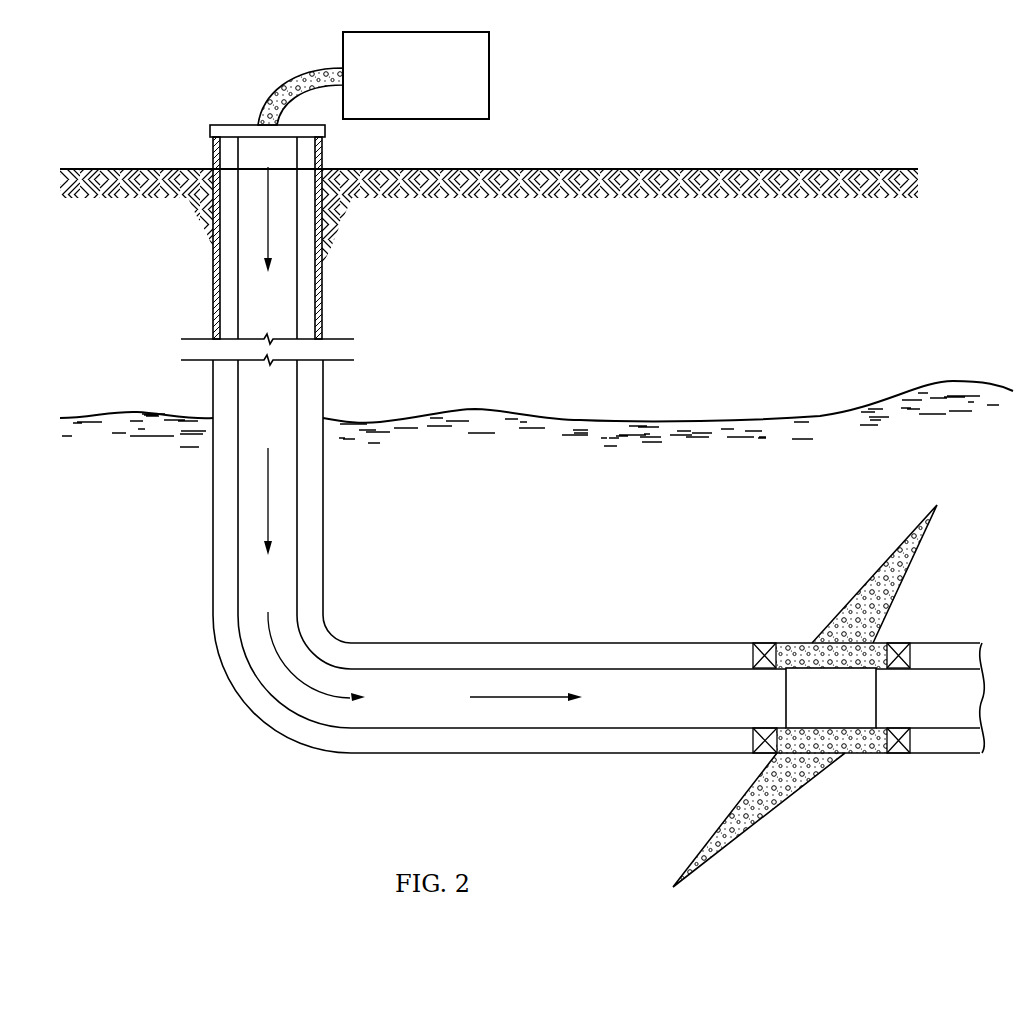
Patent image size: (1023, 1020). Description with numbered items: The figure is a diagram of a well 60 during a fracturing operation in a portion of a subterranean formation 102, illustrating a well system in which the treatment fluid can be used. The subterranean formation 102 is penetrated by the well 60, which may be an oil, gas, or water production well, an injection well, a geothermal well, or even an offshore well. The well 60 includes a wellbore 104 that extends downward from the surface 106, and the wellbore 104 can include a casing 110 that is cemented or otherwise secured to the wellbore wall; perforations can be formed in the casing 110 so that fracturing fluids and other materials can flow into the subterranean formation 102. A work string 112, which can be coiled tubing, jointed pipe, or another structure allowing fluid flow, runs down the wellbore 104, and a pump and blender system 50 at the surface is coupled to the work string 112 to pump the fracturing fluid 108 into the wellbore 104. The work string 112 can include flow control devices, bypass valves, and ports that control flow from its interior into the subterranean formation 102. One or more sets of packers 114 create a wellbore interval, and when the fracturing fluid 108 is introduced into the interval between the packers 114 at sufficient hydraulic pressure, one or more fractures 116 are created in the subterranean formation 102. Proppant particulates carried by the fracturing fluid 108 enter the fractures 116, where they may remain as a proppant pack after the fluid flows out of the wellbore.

The pump and blender system 50 is at (428, 89).
The well 60 is at (224, 706).
The subterranean formation 102 is at (548, 491).
The wellbore 104 is at (226, 244).
The surface 106 is at (762, 169).
The fracturing fluid 108 is at (290, 80).
The casing 110 is at (213, 287).
The work string 112 is at (238, 559).
The packers 114 is at (765, 643).
The fractures 116 is at (852, 571).